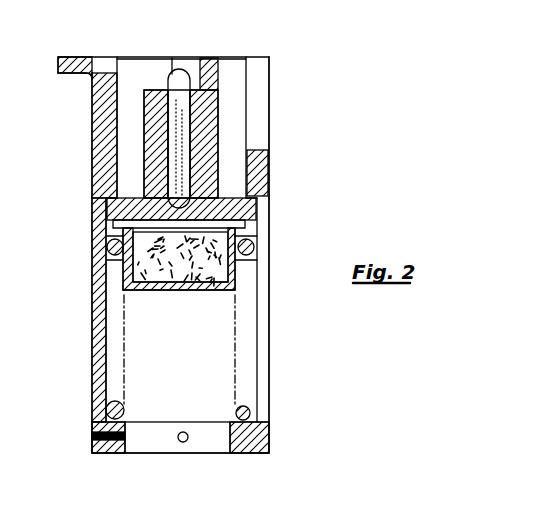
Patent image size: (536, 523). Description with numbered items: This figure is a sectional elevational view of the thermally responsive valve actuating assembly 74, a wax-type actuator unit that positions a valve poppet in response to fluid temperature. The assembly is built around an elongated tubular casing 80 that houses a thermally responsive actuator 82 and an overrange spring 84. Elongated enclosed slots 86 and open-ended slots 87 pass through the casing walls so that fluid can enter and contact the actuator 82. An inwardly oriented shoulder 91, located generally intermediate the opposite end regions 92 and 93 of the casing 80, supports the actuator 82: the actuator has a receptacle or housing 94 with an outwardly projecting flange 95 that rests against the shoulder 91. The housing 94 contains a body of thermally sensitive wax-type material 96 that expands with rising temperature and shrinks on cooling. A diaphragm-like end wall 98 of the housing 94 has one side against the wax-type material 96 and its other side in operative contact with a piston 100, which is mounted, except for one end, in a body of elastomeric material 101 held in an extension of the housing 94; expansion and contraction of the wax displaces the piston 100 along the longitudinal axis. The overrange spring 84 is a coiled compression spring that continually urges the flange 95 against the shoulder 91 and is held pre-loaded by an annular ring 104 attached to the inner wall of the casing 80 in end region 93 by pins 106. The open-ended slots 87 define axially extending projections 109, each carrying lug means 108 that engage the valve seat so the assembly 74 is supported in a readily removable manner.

The thermally responsive valve actuating assembly 74 is at (92, 130).
The elongated tubular casing 80 is at (92, 317).
The thermally responsive actuator 82 is at (257, 162).
The overrange spring 84 is at (120, 405).
The elongated enclosed slots 86 is at (260, 316).
The open-ended slots 87 is at (258, 114).
The inwardly oriented shoulder 91 is at (102, 201).
The end region of casing 92 is at (240, 80).
The end region of casing 93 is at (220, 402).
The housing 94 is at (174, 292).
The outwardly projecting flange 95 is at (246, 196).
The thermally sensitive wax-type material 96 is at (230, 265).
The diaphragm-like end wall 98 is at (110, 256).
The piston 100 is at (182, 72).
The body of elastomeric material 101 is at (208, 136).
The annular ring 104 is at (250, 437).
The pins 106 is at (182, 442).
The lug means 108 is at (98, 57).
The axially extending projections 109 is at (202, 68).